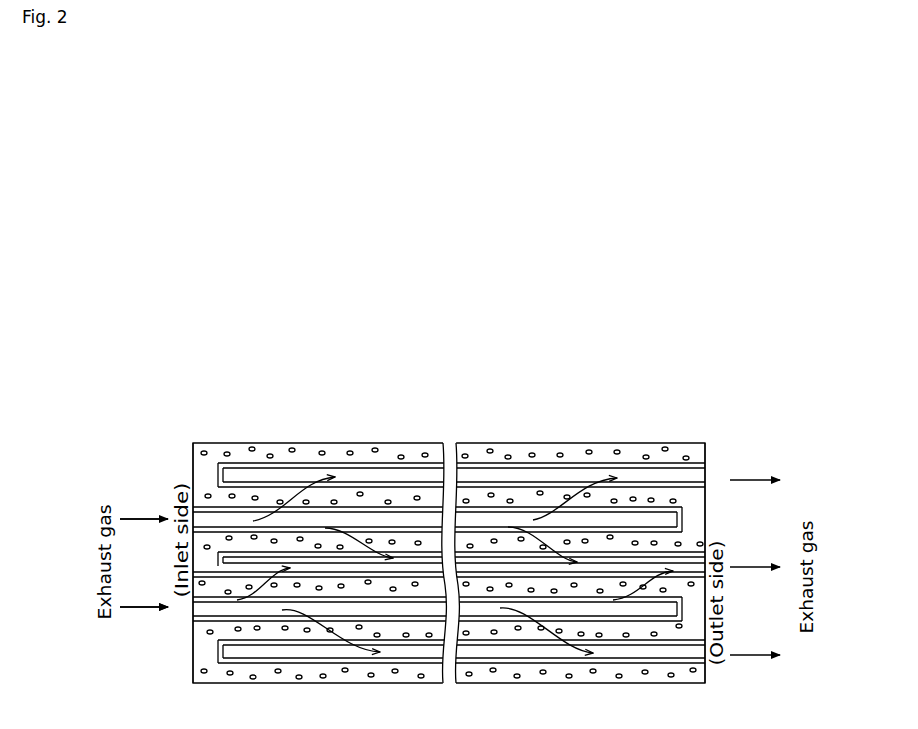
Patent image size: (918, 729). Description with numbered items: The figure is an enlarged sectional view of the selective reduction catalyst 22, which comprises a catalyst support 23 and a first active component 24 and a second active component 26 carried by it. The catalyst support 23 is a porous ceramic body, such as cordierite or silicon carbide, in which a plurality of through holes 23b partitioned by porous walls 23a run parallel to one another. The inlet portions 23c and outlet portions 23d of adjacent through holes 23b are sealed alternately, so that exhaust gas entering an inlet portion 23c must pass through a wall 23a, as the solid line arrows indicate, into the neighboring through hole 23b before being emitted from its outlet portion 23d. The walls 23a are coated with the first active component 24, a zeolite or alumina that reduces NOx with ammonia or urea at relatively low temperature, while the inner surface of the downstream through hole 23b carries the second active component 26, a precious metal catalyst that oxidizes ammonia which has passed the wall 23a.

The selective reduction catalyst 22 is at (194, 367).
The catalyst support 23 is at (265, 441).
The porous wall 23a is at (500, 457).
The through hole 23b is at (365, 472).
The inlet portion 23c is at (200, 472).
The outlet portion 23d is at (705, 520).
The first active component 24 is at (200, 612).
The second active component 26 is at (708, 478).